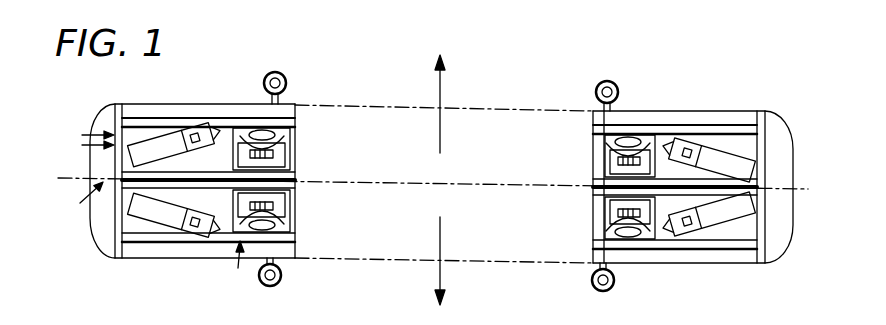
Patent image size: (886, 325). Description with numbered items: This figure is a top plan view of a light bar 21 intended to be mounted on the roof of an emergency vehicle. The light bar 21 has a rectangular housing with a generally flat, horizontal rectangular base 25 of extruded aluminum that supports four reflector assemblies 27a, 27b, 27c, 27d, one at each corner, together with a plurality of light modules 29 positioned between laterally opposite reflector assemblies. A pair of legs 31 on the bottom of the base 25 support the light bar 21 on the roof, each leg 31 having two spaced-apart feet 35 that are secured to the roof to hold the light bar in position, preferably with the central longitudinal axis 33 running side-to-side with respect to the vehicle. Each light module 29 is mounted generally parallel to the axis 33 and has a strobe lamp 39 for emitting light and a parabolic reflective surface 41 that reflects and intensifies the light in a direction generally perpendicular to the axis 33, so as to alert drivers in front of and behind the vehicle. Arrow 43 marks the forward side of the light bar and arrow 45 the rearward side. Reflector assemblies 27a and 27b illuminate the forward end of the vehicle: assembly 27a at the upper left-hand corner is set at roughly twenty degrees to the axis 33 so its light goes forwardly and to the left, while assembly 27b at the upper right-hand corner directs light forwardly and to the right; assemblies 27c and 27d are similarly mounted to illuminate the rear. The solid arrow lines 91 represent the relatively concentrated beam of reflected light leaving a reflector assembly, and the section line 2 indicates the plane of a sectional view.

The light bar 21 is at (705, 56).
The base 25 is at (643, 258).
The reflector assembly 27a is at (163, 123).
The reflector assembly 27b is at (712, 128).
The reflector assembly 27c is at (180, 243).
The reflector assembly 27d is at (725, 252).
The light module 29 is at (310, 200).
The leg 31 is at (298, 260).
The central longitudinal axis 33 is at (788, 189).
The foot 35 is at (287, 86).
The strobe lamp 39 is at (270, 134).
The parabolic reflective surface 41 is at (285, 228).
The arrow 43 is at (441, 88).
The arrow 45 is at (413, 261).
The solid arrow lines 91 is at (105, 120).
The section line 2- 2 is at (154, 237).